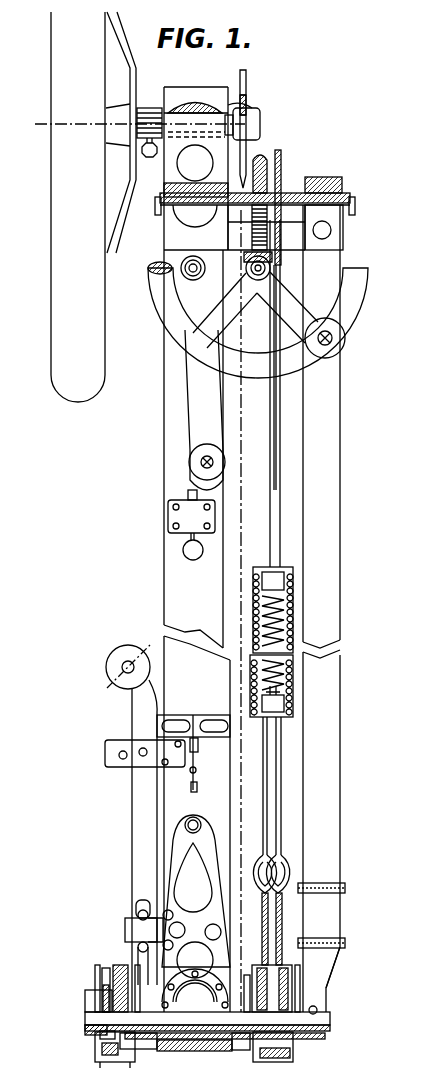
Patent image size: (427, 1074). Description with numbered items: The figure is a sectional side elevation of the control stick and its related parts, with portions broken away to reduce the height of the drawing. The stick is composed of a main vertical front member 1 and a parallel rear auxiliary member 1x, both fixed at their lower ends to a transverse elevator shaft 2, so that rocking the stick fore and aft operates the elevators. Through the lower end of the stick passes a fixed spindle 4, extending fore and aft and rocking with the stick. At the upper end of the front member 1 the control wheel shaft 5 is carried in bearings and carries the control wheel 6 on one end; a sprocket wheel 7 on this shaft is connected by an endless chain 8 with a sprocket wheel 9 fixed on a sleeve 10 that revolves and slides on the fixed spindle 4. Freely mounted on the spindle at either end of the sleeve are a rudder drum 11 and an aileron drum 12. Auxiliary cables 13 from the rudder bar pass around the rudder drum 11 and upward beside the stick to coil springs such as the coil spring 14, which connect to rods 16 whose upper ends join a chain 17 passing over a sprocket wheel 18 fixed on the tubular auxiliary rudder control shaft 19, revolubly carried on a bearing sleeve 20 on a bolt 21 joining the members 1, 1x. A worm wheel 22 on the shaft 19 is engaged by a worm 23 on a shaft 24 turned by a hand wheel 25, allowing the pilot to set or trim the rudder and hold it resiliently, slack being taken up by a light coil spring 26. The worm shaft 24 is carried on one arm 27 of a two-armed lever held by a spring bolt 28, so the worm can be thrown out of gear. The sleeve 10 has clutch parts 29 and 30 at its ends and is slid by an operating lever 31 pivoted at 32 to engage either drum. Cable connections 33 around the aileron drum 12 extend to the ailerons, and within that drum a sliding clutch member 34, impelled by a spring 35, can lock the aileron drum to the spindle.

The main vertical front member 1 is at (165, 586).
The rear auxiliary member 1x is at (332, 616).
The shaft 2 is at (185, 1002).
The fixed spindle 4 is at (318, 1011).
The control wheel shaft 5 is at (158, 108).
The control wheel 6 is at (140, 207).
The sprocket wheel 7 is at (247, 108).
The endless chain 8 is at (241, 393).
The sprocket wheel 9 is at (245, 988).
The sleeve 10 is at (140, 1049).
The rudder drum 11 is at (290, 1057).
The aileron drum 12 is at (100, 1053).
The auxiliary cables 13 is at (348, 950).
The coil spring 14 is at (290, 705).
The rods 16 is at (282, 530).
The chain 17 is at (270, 444).
The sprocket wheel 18 is at (282, 165).
The auxiliary rudder control shaft 19 is at (292, 192).
The bearing sleeve 20 is at (232, 193).
The bolt 21 is at (350, 210).
The worm wheel 22 is at (260, 155).
The worm 23 is at (270, 268).
The shaft 24 is at (250, 262).
The hand wheel 25 is at (160, 309).
The light coil spring 26 is at (282, 666).
The arm of two-armed lever 27 is at (180, 268).
The spring bolt 28 is at (190, 512).
The clutch part 29 is at (185, 1051).
The clutch part 30 is at (243, 1050).
The operating lever 31 is at (140, 847).
The pivot 32 is at (140, 928).
The cable connections 33 is at (110, 965).
The sliding clutch member 34 is at (90, 1031).
The spring 35 is at (100, 1036).